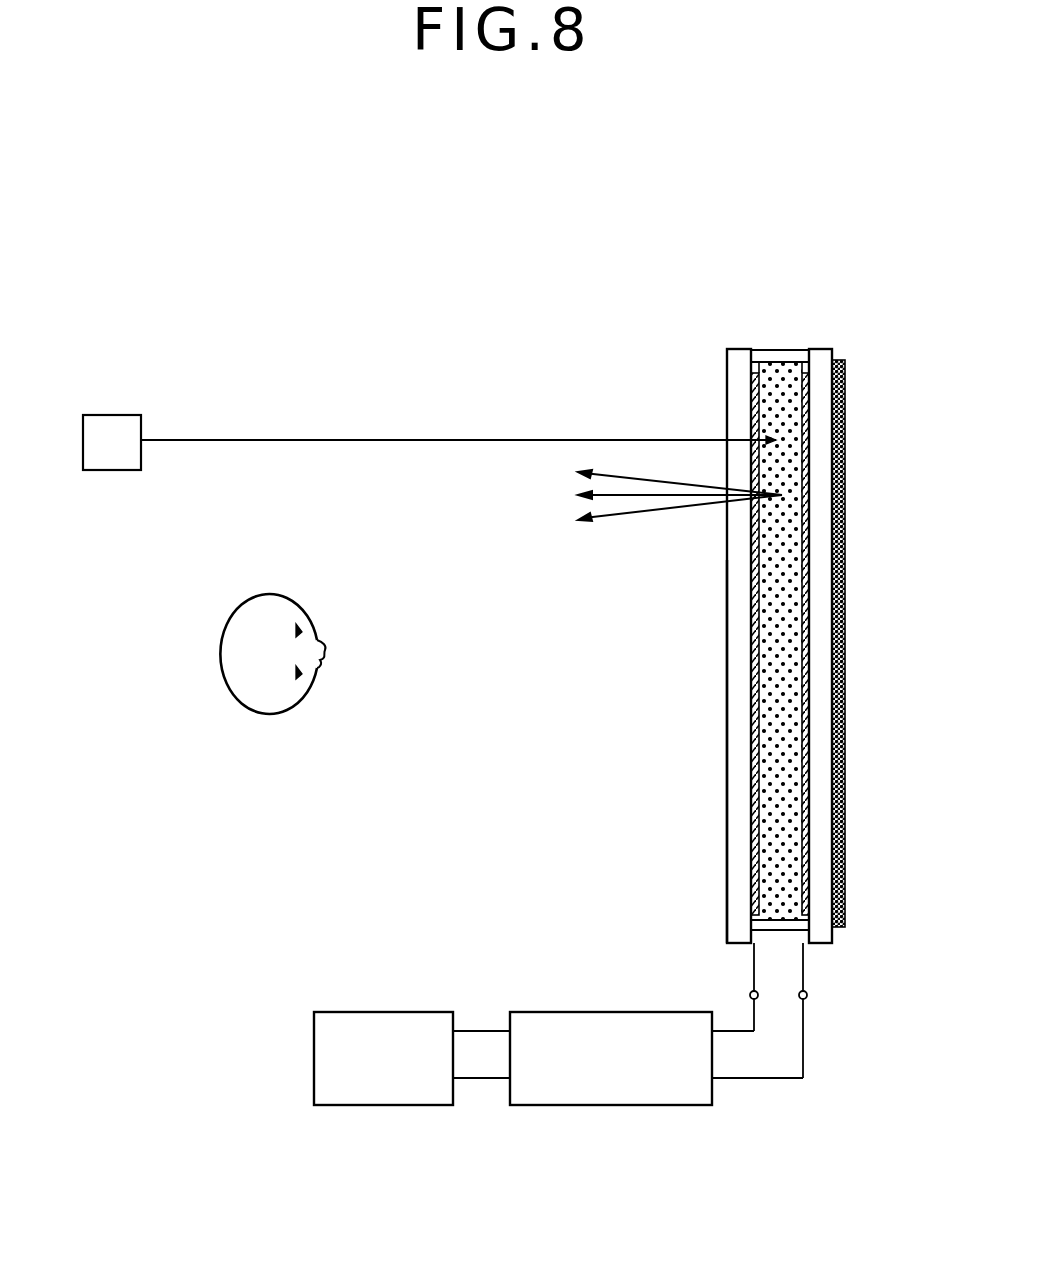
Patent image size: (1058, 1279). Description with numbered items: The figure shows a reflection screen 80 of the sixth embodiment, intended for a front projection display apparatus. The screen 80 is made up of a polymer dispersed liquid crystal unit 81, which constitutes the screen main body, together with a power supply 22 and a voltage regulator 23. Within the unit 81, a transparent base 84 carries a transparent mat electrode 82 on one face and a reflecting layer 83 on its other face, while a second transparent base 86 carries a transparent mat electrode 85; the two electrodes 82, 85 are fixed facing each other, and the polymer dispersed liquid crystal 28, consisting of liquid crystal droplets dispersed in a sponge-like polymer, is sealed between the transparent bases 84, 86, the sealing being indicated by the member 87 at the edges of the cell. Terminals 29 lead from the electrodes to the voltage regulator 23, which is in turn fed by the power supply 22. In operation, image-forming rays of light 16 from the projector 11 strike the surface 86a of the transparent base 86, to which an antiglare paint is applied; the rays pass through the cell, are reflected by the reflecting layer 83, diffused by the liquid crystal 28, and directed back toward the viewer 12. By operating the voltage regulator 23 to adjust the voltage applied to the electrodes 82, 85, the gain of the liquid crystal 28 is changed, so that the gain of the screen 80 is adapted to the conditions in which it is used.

The projector 11 is at (123, 415).
The image-forming rays of light 16 is at (358, 440).
The viewer 12 is at (233, 703).
The reflection screen 80 is at (833, 180).
The polymer dispersed liquid crystal unit 81 is at (848, 252).
The transparent base 86 is at (727, 365).
The surface 86a is at (727, 800).
The transparent mat electrode 85 is at (755, 418).
The polymer dispersed liquid crystal 28 is at (765, 703).
The seal 87 is at (777, 350).
The transparent mat electrode 82 is at (812, 418).
The transparent base 84 is at (820, 350).
The reflecting layer 83 is at (843, 362).
The terminals 29 is at (807, 995).
The power supply 22 is at (385, 1012).
The voltage regulator 23 is at (623, 1012).